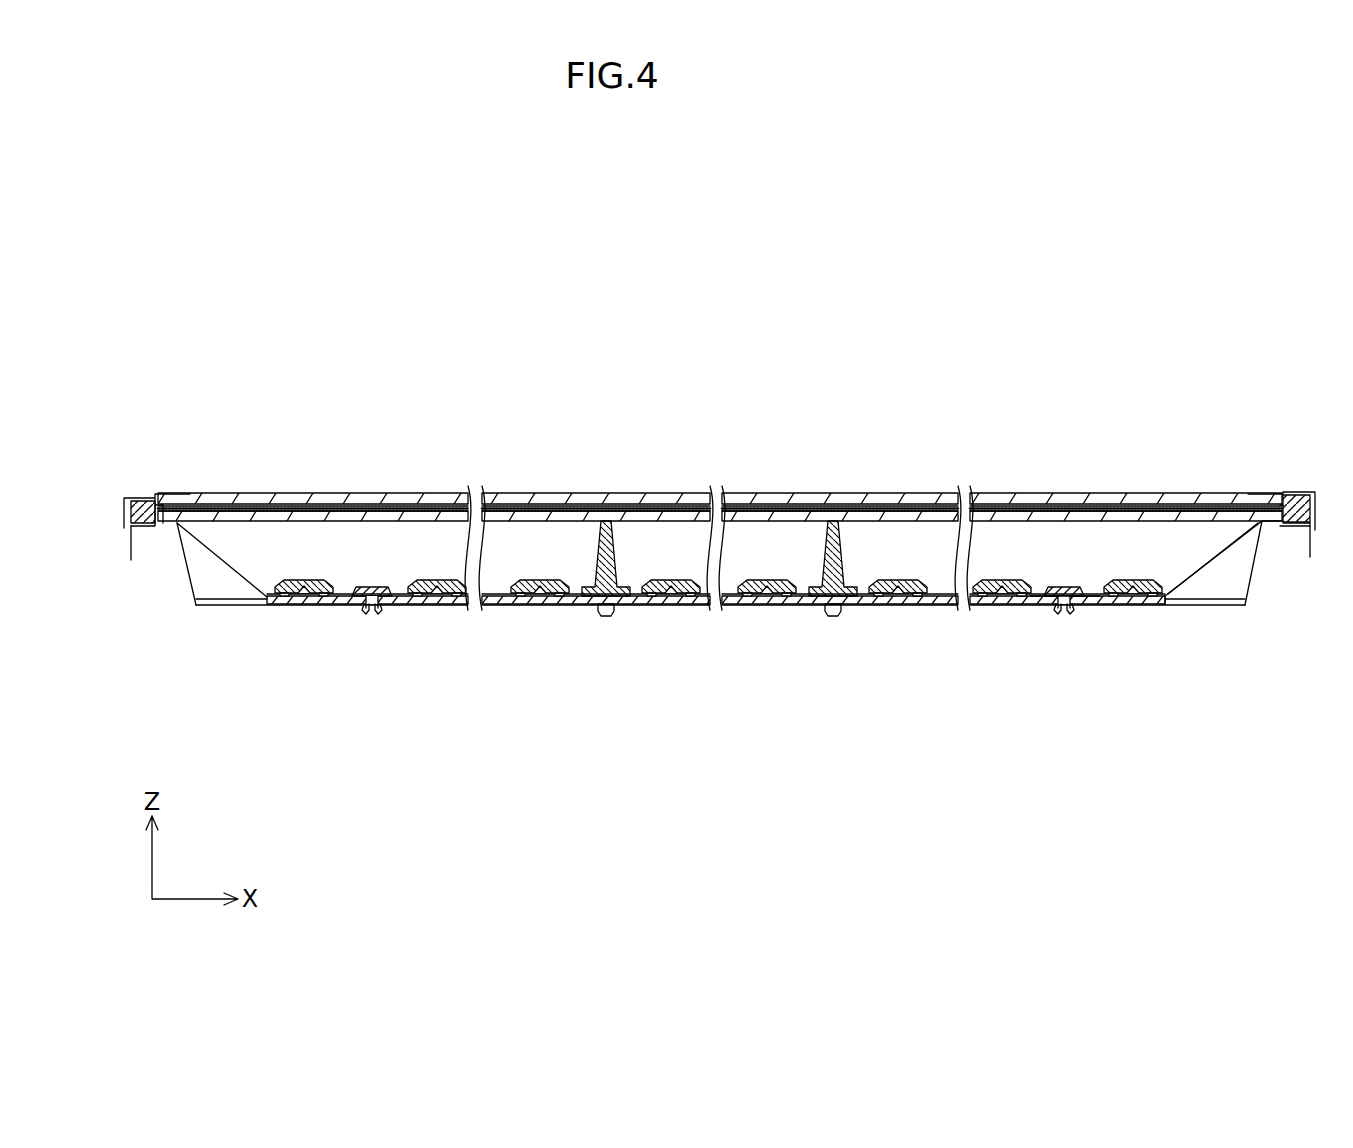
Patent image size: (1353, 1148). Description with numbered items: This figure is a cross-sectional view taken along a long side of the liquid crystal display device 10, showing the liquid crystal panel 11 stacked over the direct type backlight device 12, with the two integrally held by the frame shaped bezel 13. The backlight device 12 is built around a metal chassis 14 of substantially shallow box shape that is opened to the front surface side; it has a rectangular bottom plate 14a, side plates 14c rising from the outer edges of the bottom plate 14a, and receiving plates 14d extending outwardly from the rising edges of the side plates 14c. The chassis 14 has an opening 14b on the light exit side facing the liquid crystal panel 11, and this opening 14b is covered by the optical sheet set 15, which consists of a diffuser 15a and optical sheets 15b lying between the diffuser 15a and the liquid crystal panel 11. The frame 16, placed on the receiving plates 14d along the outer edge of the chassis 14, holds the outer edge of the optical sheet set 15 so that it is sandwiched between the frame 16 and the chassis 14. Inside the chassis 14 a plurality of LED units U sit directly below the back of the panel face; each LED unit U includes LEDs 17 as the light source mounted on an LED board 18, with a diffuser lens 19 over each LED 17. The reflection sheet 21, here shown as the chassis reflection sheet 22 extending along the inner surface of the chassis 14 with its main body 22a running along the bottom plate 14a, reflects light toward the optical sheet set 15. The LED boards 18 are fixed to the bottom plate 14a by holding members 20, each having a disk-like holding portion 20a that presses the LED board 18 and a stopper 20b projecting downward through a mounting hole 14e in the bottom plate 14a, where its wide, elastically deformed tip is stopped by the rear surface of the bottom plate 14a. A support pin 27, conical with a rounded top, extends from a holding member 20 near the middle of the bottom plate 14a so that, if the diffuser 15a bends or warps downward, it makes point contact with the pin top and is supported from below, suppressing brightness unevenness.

The liquid crystal display device 10 is at (609, 364).
The liquid crystal panel 11 is at (545, 493).
The backlight device 12 is at (582, 668).
The bezel 13 is at (173, 493).
The chassis 14 is at (711, 580).
The bottom plate 14a is at (220, 607).
The opening 14b is at (1245, 562).
The side plate 14c is at (190, 587).
The receiving plate 14d is at (150, 525).
The mounting hole 14e is at (368, 612).
The optical sheet set 15 is at (720, 452).
The diffuser 15a is at (695, 516).
The optical sheets 15b is at (675, 506).
The frame 16 is at (141, 503).
The LED 17 is at (323, 593).
The LED board 18 is at (528, 604).
The diffuser lens 19 is at (303, 588).
The holding member 20 is at (780, 574).
The holding portion 20a is at (1112, 475).
The stopper 20b is at (377, 614).
The reflection sheet 21 is at (1192, 573).
The chassis reflection sheet 22 is at (1210, 596).
The main body 22a is at (1038, 593).
The support pin 27 is at (608, 536).
The LED unit U is at (419, 568).